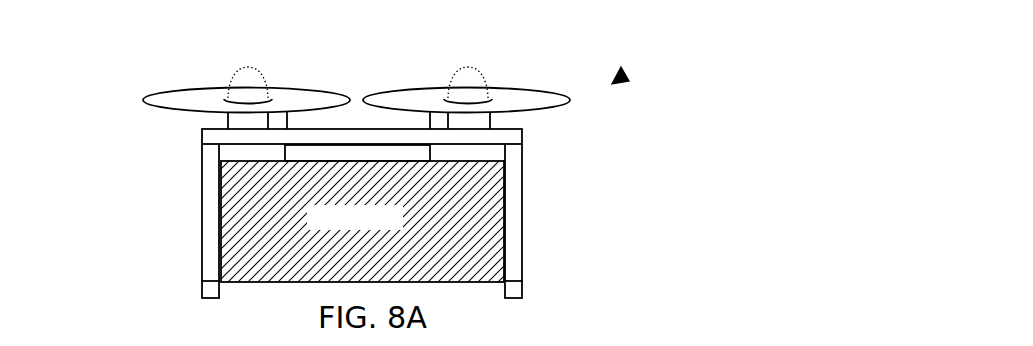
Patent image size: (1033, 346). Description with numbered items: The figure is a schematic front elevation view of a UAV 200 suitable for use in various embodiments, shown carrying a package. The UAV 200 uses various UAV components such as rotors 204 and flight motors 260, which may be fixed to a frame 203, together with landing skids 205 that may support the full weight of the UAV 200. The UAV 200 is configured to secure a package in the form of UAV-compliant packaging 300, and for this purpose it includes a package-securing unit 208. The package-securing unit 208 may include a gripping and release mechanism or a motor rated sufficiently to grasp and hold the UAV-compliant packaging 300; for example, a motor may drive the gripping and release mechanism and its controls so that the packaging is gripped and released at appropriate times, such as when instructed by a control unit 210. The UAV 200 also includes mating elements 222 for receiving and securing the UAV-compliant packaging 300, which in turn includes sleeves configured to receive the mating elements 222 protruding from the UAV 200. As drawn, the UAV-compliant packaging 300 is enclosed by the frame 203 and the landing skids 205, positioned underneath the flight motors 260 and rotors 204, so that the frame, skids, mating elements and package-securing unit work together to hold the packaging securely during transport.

The UAV 200 is at (624, 69).
The rotors 204 is at (143, 102).
The flight motors 260 is at (228, 83).
The control unit 210 is at (358, 93).
The frame 203 is at (233, 144).
The mating elements 222 is at (202, 227).
The landing skids 205 is at (202, 292).
The package-securing unit 208 is at (418, 154).
The UAV-compliant packaging 300 is at (417, 283).